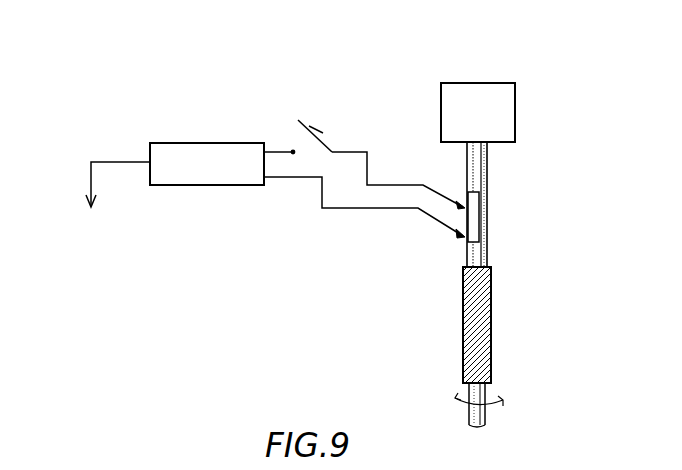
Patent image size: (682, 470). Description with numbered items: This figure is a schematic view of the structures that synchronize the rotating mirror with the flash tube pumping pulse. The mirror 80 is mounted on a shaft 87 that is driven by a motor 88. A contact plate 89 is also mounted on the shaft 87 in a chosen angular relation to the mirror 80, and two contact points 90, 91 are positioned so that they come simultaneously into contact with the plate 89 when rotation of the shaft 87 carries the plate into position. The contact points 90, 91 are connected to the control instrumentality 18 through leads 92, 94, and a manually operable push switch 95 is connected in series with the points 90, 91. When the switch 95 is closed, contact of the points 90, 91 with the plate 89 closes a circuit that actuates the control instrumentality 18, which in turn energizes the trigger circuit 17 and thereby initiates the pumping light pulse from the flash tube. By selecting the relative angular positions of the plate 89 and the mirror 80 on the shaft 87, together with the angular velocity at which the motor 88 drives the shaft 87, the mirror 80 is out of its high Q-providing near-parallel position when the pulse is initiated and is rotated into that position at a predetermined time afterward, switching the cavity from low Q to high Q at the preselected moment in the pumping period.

The trigger circuit 17 is at (91, 182).
The control instrumentality 18 is at (227, 187).
The mirror 80 is at (492, 355).
The shaft 87 is at (478, 257).
The motor 88 is at (515, 111).
The contact plate 89 is at (475, 219).
The contact point 90 is at (463, 208).
The contact point 91 is at (462, 236).
The lead 92 is at (403, 183).
The lead 94 is at (353, 210).
The push switch 95 is at (324, 140).